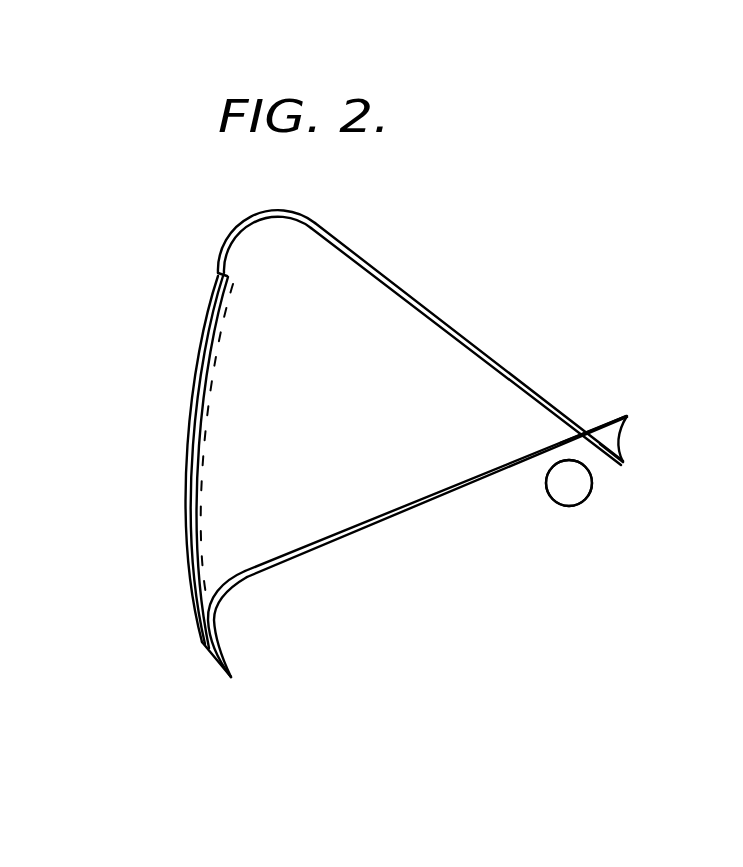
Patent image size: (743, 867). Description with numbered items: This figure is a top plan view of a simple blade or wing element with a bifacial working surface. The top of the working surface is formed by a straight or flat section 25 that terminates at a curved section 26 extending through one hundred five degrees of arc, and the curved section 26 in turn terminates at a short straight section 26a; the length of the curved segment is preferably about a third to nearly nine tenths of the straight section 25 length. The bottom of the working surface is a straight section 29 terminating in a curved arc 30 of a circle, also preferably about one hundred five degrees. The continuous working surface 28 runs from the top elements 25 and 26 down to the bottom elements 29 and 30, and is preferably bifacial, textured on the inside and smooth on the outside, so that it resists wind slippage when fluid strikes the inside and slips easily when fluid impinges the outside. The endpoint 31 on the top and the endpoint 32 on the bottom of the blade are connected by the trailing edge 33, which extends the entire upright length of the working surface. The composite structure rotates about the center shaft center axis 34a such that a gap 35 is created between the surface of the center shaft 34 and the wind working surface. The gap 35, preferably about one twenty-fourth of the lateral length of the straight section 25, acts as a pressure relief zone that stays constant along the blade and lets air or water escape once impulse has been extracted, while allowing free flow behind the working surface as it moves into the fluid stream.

The straight section 25 is at (400, 352).
The curved section 26 is at (257, 237).
The straight section 26a is at (223, 664).
The working surface 28 is at (200, 414).
The straight section 29 is at (363, 527).
The curved arc 30 is at (200, 648).
The endpoint 31 is at (624, 465).
The endpoint 32 is at (628, 416).
The trailing edge 33 is at (617, 440).
The center shaft 34 is at (545, 492).
The center shaft center axis 34a is at (570, 483).
The gap 35 is at (573, 449).